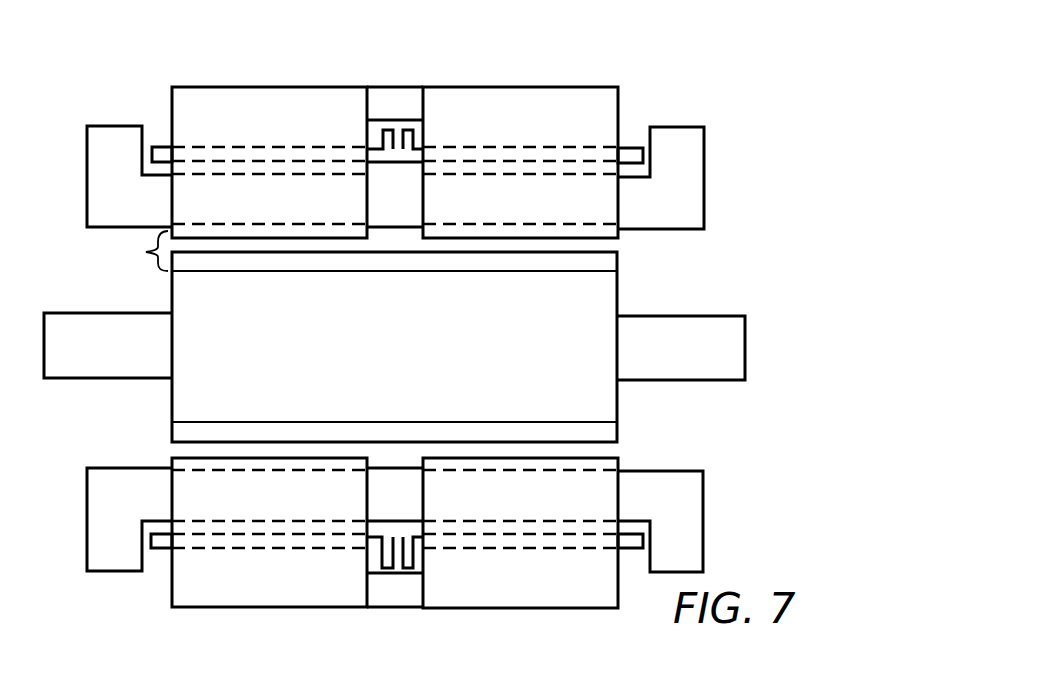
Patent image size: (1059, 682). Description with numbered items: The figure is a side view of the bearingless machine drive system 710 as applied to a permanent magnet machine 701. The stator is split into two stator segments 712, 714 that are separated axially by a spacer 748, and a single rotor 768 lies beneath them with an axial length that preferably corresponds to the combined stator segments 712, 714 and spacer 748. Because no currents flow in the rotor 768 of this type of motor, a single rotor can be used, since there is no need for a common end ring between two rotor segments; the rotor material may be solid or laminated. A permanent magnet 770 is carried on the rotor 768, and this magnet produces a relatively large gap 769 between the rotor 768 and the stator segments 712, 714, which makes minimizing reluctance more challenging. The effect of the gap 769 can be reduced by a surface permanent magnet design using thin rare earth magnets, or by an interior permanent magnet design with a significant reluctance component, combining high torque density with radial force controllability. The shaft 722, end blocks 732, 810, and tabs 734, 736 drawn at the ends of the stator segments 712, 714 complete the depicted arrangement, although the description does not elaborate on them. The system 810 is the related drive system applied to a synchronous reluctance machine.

The bearingless machine drive system 710 is at (676, 55).
The stator segment 712 is at (269, 162).
The stator segment 714 is at (520, 162).
The shaft 722 is at (72, 312).
The end block 732 is at (677, 133).
The left tab 734 is at (167, 146).
The right tab 736 is at (637, 148).
The spacer 748 is at (397, 100).
The rotor 768 is at (394, 347).
The gap 769 is at (135, 251).
The permanent magnet 770 is at (610, 265).
The permanent magnet machine 701 is at (312, 612).
The bearingless machine drive system 810 is at (673, 576).